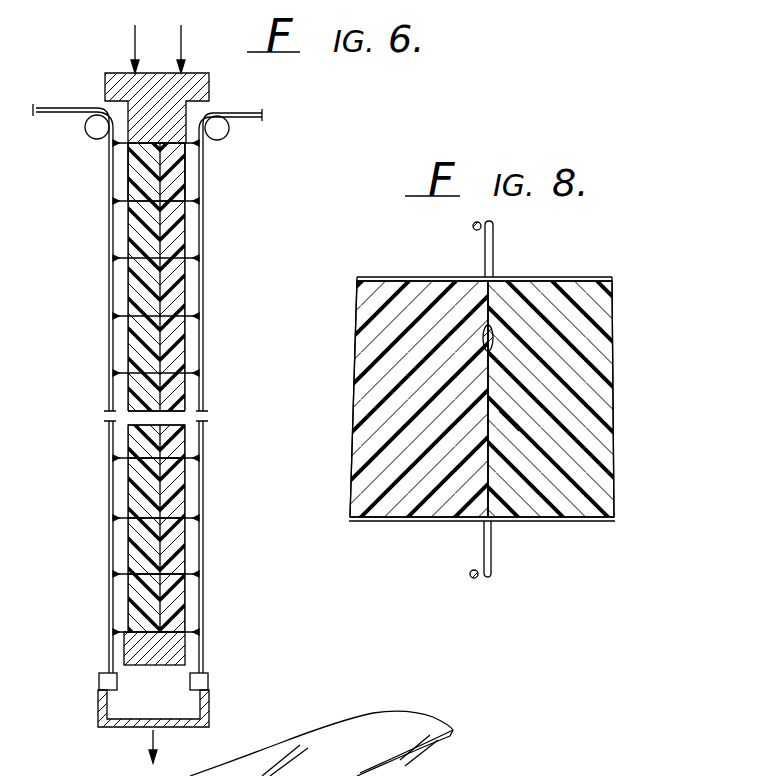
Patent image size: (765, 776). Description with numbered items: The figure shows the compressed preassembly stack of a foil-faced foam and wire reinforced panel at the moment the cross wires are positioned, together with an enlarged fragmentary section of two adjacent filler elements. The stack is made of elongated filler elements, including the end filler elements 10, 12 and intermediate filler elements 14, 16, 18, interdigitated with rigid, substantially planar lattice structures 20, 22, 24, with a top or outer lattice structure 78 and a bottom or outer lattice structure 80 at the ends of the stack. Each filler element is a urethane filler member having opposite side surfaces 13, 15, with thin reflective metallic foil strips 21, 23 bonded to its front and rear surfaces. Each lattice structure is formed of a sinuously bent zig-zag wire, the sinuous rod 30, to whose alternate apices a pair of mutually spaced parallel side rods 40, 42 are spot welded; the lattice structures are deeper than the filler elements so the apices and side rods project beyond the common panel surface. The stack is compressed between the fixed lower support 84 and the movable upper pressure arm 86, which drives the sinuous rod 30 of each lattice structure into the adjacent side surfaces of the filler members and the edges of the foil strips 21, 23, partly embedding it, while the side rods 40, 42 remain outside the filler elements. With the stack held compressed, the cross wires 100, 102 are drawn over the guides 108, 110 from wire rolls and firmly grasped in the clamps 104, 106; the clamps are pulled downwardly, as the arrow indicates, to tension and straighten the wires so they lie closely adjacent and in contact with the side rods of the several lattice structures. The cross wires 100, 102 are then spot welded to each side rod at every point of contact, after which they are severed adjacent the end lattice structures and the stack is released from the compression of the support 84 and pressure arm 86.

In FIG. 6, the end filler element 10 is at (182, 617).
In FIG. 8, the end filler element 10 is at (612, 328).
In FIG. 6, the end filler element 12 is at (178, 181).
In FIG. 8, the side surface 13 is at (490, 429).
In FIG. 6, the intermediate filler element 14 is at (182, 555).
In FIG. 8, the intermediate filler element 14 is at (360, 327).
In FIG. 8, the side surface 15 is at (486, 410).
In FIG. 6, the intermediate filler element 16 is at (182, 504).
In FIG. 6, the intermediate filler element 18 is at (182, 438).
In FIG. 6, the lattice structure 20 is at (196, 578).
In FIG. 8, the lattice structure 20 is at (494, 546).
In FIG. 6, the metallic foil strip 21 is at (127, 226).
In FIG. 8, the metallic foil strip 21 is at (392, 277).
In FIG. 6, the lattice structure 22 is at (198, 526).
In FIG. 6, the metallic foil strip 23 is at (186, 228).
In FIG. 8, the metallic foil strip 23 is at (405, 522).
In FIG. 6, the lattice structure 24 is at (197, 461).
In FIG. 8, the sinuous rod 30 is at (483, 336).
In FIG. 8, the side rod 40 is at (472, 224).
In FIG. 8, the side rod 42 is at (469, 576).
In FIG. 6, the outer lattice structure 78 is at (136, 149).
In FIG. 6, the outer lattice structure 80 is at (190, 632).
In FIG. 6, the fixed lower support 84 is at (182, 660).
In FIG. 6, the movable upper pressure arm 86 is at (204, 77).
In FIG. 6, the cross wire 100 is at (78, 107).
In FIG. 6, the cross wire 102 is at (240, 113).
In FIG. 6, the clamp 104 is at (99, 683).
In FIG. 6, the clamp 106 is at (208, 683).
In FIG. 6, the guide 108 is at (88, 132).
In FIG. 6, the guide 110 is at (226, 134).